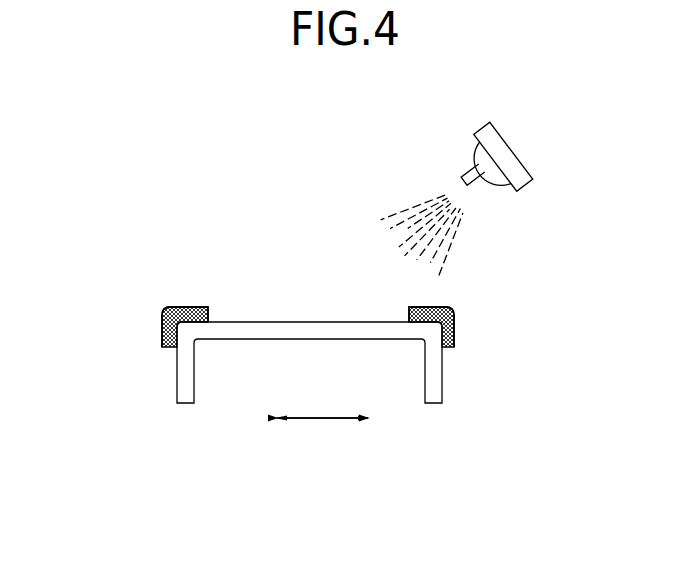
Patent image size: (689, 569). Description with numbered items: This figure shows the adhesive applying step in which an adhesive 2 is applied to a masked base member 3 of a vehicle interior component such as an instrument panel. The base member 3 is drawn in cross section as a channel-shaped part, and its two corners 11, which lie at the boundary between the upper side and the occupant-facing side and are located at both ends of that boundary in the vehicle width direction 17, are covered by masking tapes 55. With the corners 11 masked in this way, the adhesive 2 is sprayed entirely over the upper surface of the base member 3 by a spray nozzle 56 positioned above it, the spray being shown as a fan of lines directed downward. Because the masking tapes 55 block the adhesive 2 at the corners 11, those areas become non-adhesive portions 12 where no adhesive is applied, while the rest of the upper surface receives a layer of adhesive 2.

The adhesive 2 is at (408, 207).
The base member 3 is at (462, 403).
The corners 11 is at (167, 299).
The non-adhesive portions 12 is at (385, 309).
The vehicle width direction 17 is at (323, 420).
The masking tapes 55 is at (163, 327).
The spray nozzle 56 is at (471, 162).